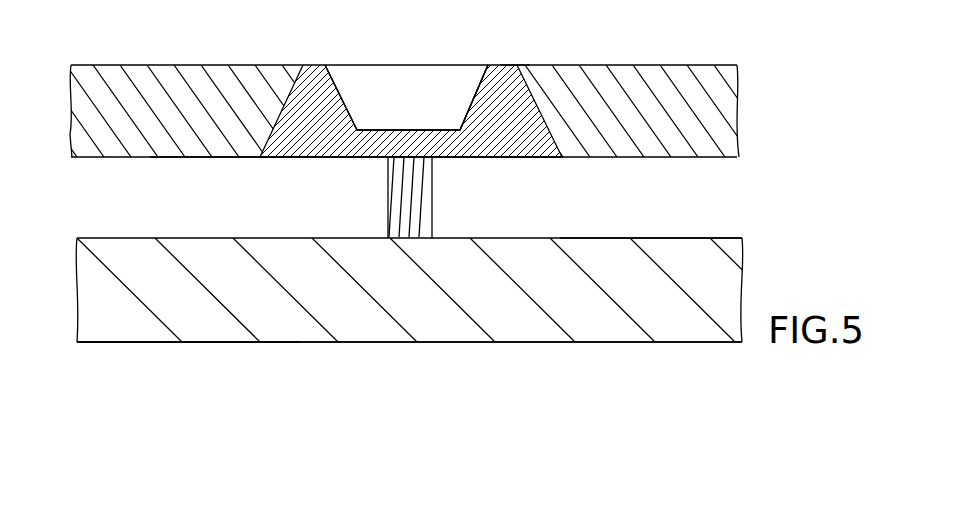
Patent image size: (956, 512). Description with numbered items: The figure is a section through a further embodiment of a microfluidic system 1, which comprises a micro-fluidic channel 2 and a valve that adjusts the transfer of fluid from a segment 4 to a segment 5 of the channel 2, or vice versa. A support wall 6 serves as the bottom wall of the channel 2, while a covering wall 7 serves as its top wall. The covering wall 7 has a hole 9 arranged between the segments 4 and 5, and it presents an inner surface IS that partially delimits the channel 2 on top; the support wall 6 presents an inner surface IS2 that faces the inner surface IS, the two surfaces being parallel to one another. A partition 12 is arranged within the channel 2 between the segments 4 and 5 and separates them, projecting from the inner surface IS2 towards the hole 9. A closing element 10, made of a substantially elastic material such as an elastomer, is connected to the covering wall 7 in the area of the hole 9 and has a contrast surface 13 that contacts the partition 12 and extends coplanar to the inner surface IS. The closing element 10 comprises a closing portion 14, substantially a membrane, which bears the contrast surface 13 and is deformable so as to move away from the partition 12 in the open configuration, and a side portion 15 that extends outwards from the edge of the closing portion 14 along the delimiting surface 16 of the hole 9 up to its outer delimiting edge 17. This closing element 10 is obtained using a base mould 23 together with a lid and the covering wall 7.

The microfluidic system 1 is at (199, 376).
The micro-fluidic channel 2 is at (561, 257).
The segment 4 is at (100, 161).
The segment 5 is at (679, 229).
The support wall 6 is at (118, 336).
The covering wall 7 is at (715, 122).
The hole 9 is at (369, 90).
The closing element 10 is at (420, 104).
The partition 12 is at (420, 227).
The contrast surface 13 is at (370, 167).
The closing portion 14 is at (443, 153).
The side portion 15 is at (476, 95).
The delimiting surface 16 is at (288, 121).
The outer delimiting edge 17 is at (510, 56).
The base mould 23 is at (615, 0).
The inner surface IS is at (186, 166).
The inner surface IS2 is at (611, 230).